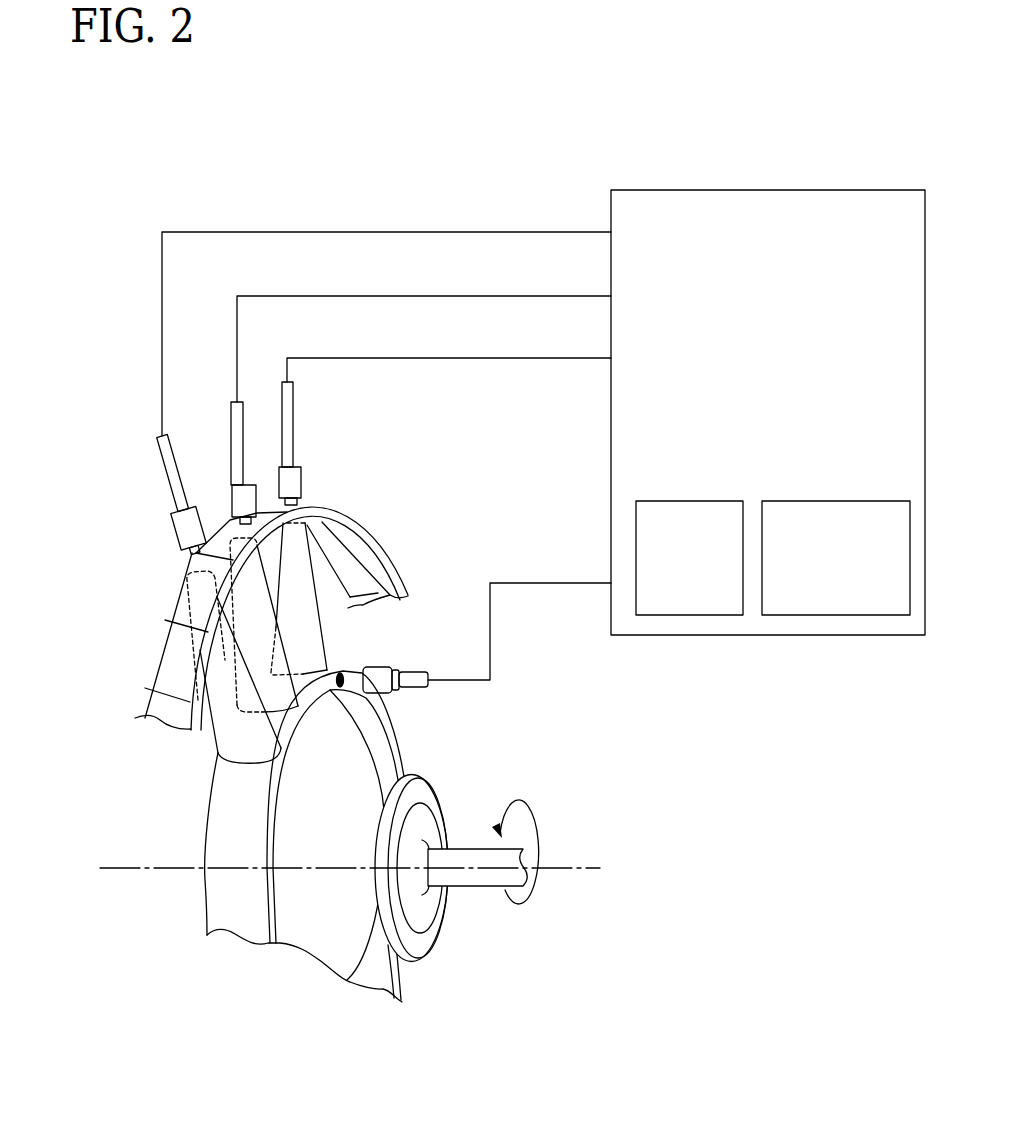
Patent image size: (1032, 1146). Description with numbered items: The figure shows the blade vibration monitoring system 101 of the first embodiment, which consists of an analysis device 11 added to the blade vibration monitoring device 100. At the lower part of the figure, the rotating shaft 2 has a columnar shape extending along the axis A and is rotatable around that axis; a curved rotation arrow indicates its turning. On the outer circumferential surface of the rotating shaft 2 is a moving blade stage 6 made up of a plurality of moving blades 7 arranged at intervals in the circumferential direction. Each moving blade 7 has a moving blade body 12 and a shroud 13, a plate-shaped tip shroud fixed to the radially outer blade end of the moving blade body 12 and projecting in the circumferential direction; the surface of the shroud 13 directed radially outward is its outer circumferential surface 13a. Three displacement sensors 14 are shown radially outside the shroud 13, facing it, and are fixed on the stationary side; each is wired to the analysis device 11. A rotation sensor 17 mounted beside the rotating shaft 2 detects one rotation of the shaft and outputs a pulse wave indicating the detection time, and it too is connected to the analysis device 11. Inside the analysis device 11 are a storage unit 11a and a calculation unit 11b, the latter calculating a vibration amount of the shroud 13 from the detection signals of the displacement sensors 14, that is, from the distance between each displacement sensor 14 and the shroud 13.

The blade vibration monitoring system 101 is at (125, 203).
The blade vibration monitoring device 100 is at (103, 473).
The analysis device 11 is at (806, 189).
The storage unit 11a is at (685, 502).
The calculation unit 11b is at (820, 502).
The shroud 13 is at (220, 533).
The outer circumferential surface 13a is at (168, 656).
The displacement sensor 14 is at (180, 527).
The moving blade body 12 is at (303, 567).
The moving blade 7 is at (262, 619).
The moving blade stage 6 is at (402, 564).
The rotating shaft 2 is at (217, 828).
The rotation sensor 17 is at (390, 693).
The axis A is at (580, 878).